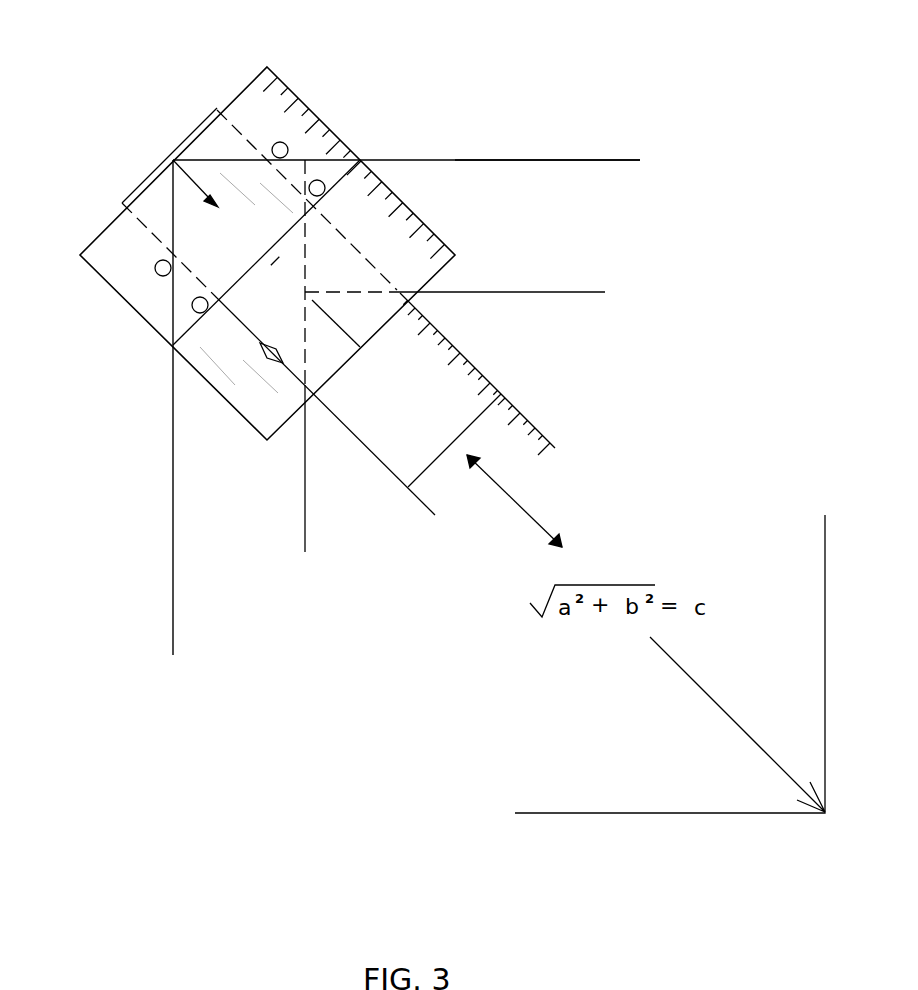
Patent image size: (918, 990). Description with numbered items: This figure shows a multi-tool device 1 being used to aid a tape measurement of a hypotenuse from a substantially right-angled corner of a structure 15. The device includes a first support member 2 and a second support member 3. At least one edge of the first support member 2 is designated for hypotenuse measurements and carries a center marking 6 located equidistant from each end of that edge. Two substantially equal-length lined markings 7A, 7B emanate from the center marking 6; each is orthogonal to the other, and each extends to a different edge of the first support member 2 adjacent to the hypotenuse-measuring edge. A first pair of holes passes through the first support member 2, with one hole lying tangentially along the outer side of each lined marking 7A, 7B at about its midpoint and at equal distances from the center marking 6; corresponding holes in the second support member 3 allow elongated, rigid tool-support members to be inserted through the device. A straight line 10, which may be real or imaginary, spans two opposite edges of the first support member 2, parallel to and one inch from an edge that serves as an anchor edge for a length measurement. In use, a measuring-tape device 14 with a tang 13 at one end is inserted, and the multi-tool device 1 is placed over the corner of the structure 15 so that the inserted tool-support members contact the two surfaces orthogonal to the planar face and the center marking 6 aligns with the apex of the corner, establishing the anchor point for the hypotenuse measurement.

The multi-tool device 1 is at (107, 207).
The first support member 2 is at (413, 273).
The second support member 3 is at (474, 390).
The center marking 6 is at (175, 167).
The lined marking 7A is at (170, 298).
The lined marking 7B is at (305, 157).
The straight line 10 is at (340, 183).
The tang 13 is at (190, 135).
The measuring-tape device 14 is at (490, 382).
The corner of the structure 15 is at (563, 195).